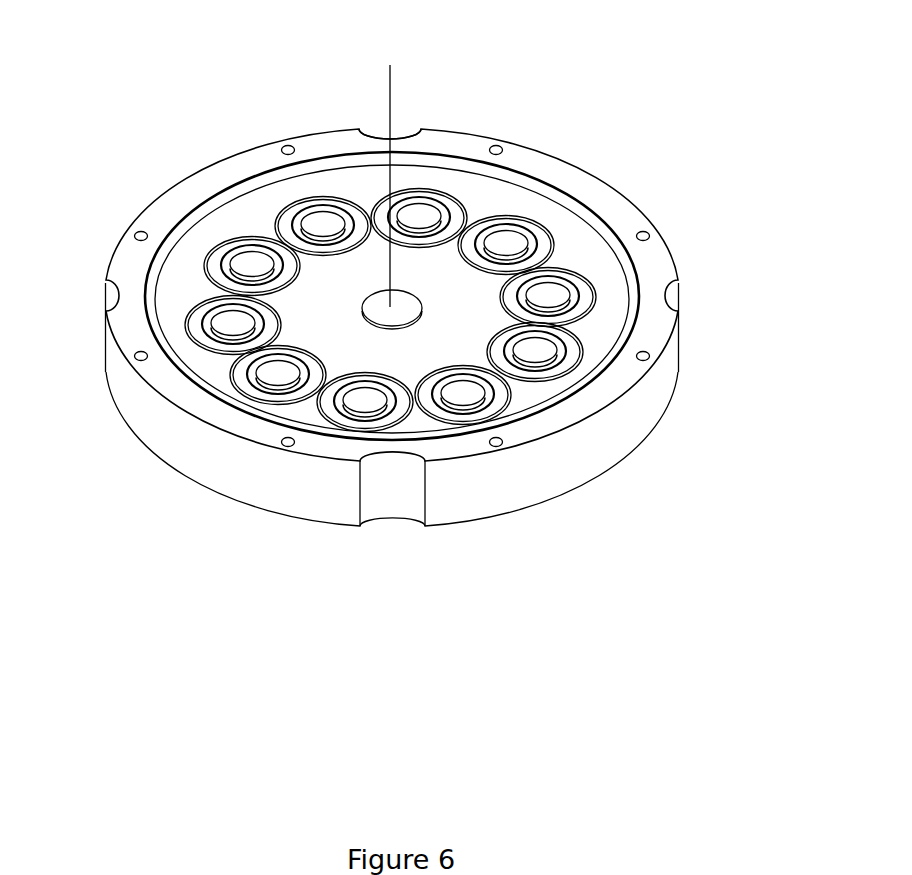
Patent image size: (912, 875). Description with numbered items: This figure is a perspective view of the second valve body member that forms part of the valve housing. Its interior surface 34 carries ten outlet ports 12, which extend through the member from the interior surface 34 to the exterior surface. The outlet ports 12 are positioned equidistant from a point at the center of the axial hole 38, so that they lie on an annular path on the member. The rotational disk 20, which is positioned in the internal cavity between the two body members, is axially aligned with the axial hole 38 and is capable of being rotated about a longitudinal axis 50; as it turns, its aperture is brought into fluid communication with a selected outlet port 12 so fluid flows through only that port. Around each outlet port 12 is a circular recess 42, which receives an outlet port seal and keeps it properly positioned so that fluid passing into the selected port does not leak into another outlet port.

The outlet port 12 is at (537, 365).
The rotational disk 20 is at (440, 128).
The interior surface 34 is at (582, 240).
The axial hole 38 is at (395, 310).
The recess 42 is at (238, 380).
The longitudinal axis 50 is at (390, 112).